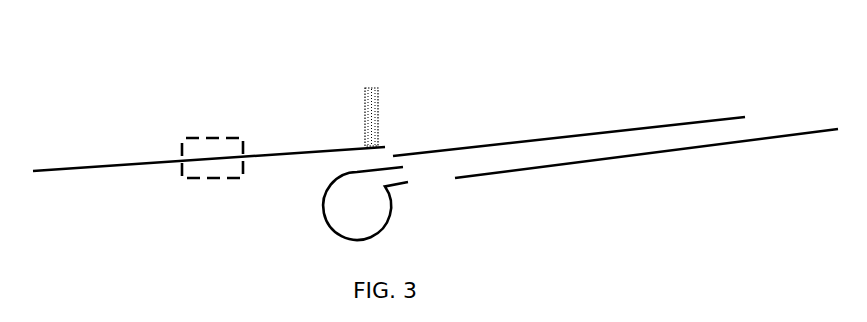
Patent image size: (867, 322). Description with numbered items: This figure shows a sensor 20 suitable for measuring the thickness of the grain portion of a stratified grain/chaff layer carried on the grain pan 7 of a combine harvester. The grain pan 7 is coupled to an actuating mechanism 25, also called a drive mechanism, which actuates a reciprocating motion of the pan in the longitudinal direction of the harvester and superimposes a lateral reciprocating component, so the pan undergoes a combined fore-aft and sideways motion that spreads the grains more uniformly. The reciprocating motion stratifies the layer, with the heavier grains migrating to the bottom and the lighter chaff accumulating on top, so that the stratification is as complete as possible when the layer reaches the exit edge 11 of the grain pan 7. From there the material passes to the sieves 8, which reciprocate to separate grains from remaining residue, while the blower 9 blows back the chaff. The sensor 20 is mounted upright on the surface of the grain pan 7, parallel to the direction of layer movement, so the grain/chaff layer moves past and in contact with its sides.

The grain pan 7 is at (120, 163).
The sieves 8 is at (763, 142).
The blower 9 is at (350, 206).
The exit edge 11 is at (389, 144).
The sensor 20 is at (378, 91).
The actuating mechanism 25 is at (221, 138).